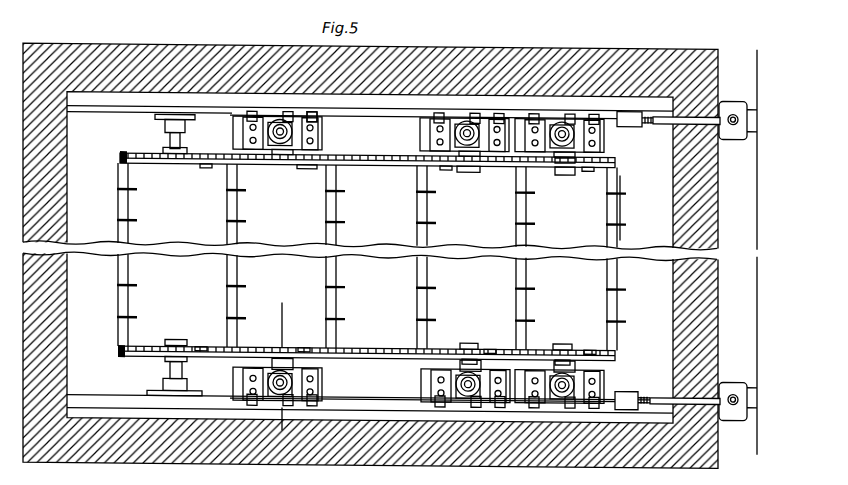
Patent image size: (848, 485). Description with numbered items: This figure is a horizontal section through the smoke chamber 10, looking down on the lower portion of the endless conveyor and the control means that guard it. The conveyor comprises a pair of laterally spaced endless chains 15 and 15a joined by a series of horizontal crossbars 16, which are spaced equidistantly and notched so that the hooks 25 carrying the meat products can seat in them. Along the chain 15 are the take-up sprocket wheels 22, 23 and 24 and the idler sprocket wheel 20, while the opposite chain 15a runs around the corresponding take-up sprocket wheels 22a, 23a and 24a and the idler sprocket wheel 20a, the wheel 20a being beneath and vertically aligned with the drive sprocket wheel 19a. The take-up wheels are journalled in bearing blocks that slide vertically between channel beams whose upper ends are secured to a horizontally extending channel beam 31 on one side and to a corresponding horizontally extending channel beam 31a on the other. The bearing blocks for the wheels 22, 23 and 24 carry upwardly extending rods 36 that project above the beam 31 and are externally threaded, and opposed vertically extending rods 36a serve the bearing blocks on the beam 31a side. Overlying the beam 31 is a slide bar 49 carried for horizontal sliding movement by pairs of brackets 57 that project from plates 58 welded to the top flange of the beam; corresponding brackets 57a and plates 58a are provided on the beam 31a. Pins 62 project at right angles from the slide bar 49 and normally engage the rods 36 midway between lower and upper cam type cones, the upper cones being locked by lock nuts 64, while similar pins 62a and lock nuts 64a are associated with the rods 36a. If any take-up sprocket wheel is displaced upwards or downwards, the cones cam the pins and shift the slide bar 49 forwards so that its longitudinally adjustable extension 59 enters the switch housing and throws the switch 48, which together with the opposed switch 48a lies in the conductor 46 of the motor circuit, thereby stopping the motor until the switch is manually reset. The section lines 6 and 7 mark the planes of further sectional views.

The smoke chamber 10 is at (660, 212).
The housing wall / section line 6- 6 is at (512, 58).
The section line 7- 7 is at (300, 311).
The conductor 46 is at (757, 271).
The switch 48a is at (738, 92).
The switch 48 is at (733, 417).
The horizontally extending channel beam 31a is at (102, 106).
The horizontally extending channel beam 31 is at (80, 397).
The endless chain 15a is at (121, 152).
The endless chain 15 is at (120, 356).
The crossbars 16 is at (619, 209).
The hooks 25 is at (626, 193).
The idler sprocket wheel 20a is at (201, 162).
The take-up sprocket wheel 24a is at (310, 162).
The take-up sprocket wheel 23a is at (448, 162).
The take-up sprocket wheel 22a is at (590, 162).
The idler sprocket wheel 20 is at (205, 337).
The take-up sprocket wheel 24 is at (303, 345).
The take-up sprocket wheel 23 is at (490, 351).
The take-up sprocket wheel 22 is at (590, 351).
The drive sprocket wheel 19a is at (333, 116).
The vertically extending rods 36a is at (277, 116).
The lock nuts 64a is at (281, 115).
The pins 62a is at (304, 108).
The plates 58a is at (242, 133).
The brackets 57a is at (319, 137).
The slide bar 49 is at (355, 399).
The longitudinally adjustable extension 59 is at (645, 397).
The pins 62 is at (487, 396).
The upwardly extending rods 36 is at (270, 389).
The lock nuts 64 is at (286, 398).
The plates 58 is at (237, 398).
The brackets 57 is at (243, 380).